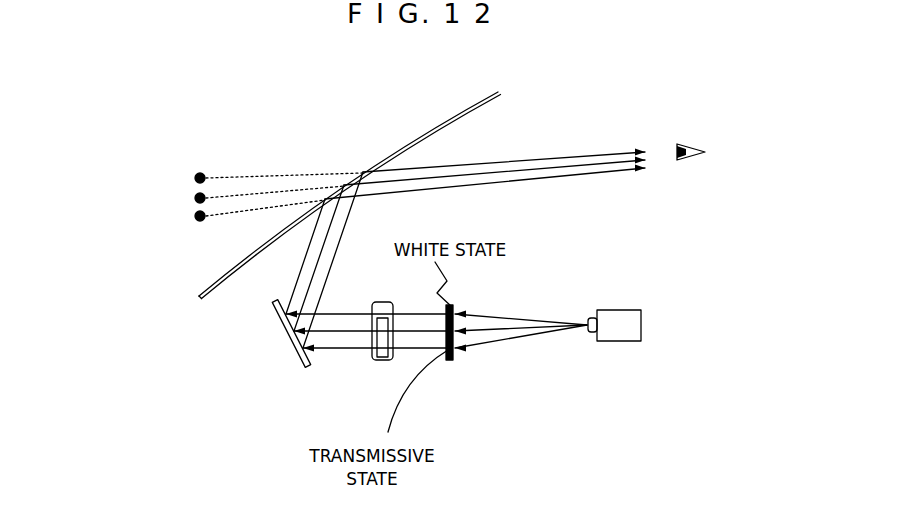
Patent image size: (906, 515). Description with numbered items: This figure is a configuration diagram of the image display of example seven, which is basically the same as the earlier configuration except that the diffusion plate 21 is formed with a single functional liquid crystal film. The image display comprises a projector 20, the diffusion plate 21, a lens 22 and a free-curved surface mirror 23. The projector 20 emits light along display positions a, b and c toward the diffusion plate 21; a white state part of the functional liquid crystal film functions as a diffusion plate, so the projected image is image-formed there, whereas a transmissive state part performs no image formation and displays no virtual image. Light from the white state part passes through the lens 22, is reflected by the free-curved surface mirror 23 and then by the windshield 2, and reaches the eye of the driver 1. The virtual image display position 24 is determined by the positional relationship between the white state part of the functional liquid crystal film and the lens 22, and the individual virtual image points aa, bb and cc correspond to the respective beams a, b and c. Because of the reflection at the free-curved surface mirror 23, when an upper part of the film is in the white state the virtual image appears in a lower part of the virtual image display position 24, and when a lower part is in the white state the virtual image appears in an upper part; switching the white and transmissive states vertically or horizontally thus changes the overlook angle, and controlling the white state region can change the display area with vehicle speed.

The driver 1 is at (727, 134).
The windshield 2 is at (375, 195).
The projector 20 is at (657, 313).
The diffusion plate 21 is at (463, 372).
The lens 22 is at (359, 359).
The free-curved surface mirror 23 is at (277, 355).
The virtual image display position 24 is at (217, 197).
The display position for a virtual image a is at (521, 304).
The display position for a virtual image b is at (521, 314).
The display position for a virtual image c is at (521, 359).
The virtual image of beam a aa is at (247, 212).
The virtual image of beam b bb is at (256, 196).
The virtual image of beam c cc is at (266, 178).